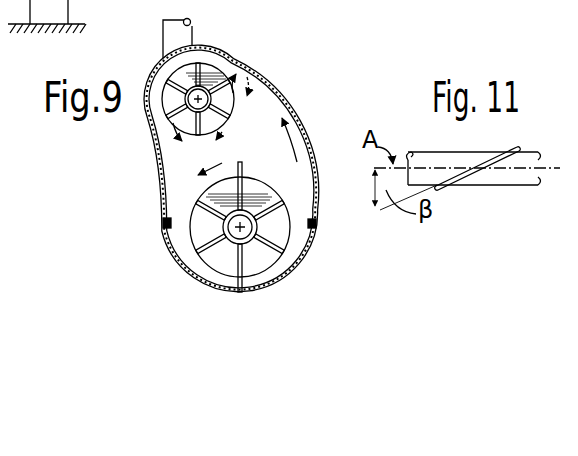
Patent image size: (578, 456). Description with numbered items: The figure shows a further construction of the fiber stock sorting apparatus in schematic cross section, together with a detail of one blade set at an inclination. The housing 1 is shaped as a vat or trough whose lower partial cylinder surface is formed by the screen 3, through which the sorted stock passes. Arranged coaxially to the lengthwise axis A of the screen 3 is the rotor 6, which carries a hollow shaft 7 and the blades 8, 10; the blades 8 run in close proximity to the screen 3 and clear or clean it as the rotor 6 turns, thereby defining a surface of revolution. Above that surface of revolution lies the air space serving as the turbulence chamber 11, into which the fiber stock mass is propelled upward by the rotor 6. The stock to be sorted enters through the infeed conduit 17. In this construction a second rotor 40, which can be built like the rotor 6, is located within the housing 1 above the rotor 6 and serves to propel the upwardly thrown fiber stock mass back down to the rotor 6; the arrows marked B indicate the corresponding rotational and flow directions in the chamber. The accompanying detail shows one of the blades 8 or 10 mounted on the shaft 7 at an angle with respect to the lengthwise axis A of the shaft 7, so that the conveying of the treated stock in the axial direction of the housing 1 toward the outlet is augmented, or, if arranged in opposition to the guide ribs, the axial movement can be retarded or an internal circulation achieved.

In FIG. 9, the housing 1 is at (296, 108).
In FIG. 9, the screen 3 is at (297, 272).
In FIG. 9, the rotor 6 is at (278, 230).
In FIG. 9, the turbulence chamber 11 is at (212, 66).
In FIG. 9, the infeed conduit 17 is at (184, 36).
In FIG. 9, the second rotor 40 is at (213, 70).
In FIG. 11, the hollow shaft 7 is at (523, 157).
In FIG. 11, the blades 8 is at (498, 188).
In FIG. 11, the blades 10 is at (467, 172).
In FIG. 9, the lengthwise axis A is at (250, 228).
In FIG. 9, the direction B is at (214, 113).